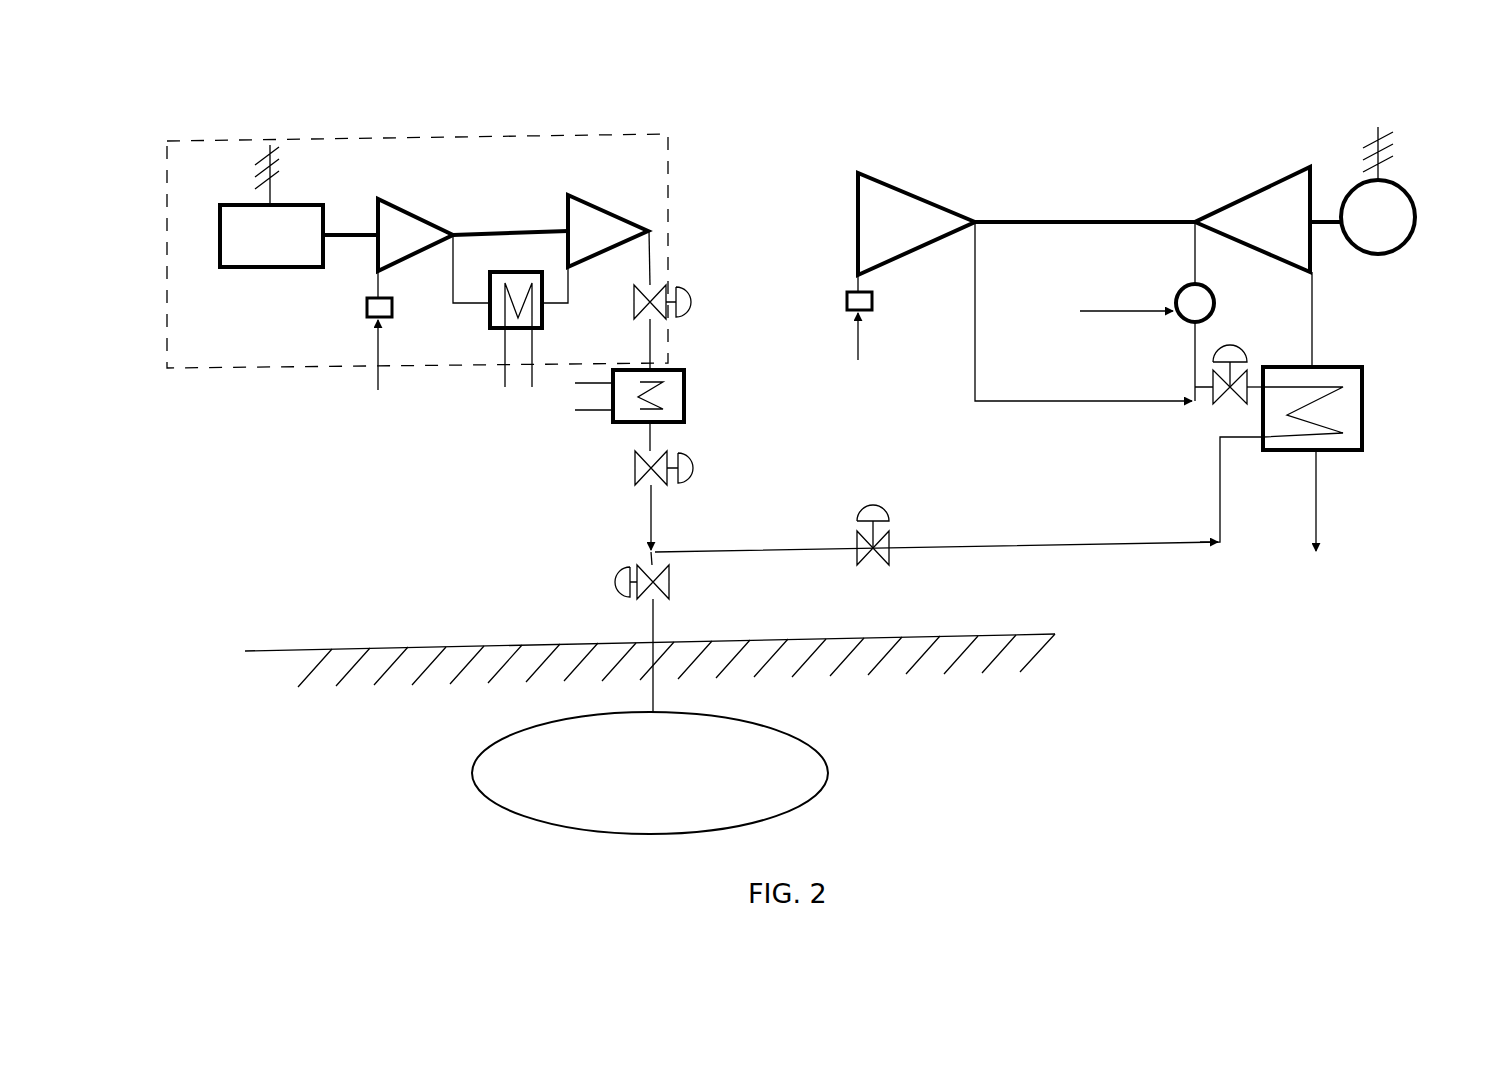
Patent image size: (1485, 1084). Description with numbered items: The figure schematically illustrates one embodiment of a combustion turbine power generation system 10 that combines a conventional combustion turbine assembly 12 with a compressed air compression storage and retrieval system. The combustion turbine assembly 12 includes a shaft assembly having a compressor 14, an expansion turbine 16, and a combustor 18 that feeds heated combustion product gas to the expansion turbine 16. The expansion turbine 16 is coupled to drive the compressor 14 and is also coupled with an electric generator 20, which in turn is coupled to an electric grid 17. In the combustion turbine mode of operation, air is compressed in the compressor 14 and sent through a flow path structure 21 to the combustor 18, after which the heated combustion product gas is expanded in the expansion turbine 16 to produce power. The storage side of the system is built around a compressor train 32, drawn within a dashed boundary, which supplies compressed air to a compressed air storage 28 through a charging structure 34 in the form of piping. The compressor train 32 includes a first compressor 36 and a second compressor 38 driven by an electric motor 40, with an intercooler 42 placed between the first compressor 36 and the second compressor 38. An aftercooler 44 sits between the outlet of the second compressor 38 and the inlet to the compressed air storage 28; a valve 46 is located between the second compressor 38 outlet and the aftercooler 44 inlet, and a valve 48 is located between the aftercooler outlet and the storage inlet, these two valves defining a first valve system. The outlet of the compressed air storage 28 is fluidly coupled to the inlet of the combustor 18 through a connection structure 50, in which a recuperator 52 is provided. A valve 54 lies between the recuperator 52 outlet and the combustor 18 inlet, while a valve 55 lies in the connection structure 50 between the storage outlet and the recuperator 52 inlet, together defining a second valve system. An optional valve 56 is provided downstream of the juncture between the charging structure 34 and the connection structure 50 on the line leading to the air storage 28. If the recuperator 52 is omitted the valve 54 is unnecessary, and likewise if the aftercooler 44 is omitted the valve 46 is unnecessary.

The combustion turbine power generation system 10 is at (784, 88).
The combustion turbine assembly 12 is at (1083, 200).
The compressor 14 is at (898, 210).
The expansion turbine 16 is at (1251, 220).
The electric grid 17 is at (250, 176).
The combustor 18 is at (1180, 323).
The electric generator 20 is at (1405, 218).
The flow path structure 21 is at (987, 362).
The compressed air storage 28 is at (802, 768).
The compressor train 32 is at (660, 168).
The charging structure 34 is at (665, 520).
The first compressor 36 is at (410, 225).
The second compressor 38 is at (582, 220).
The electric motor 40 is at (257, 273).
The intercooler 42 is at (487, 316).
The aftercooler 44 is at (676, 400).
The valve 46 is at (691, 302).
The valve 48 is at (693, 467).
The connection structure 50 is at (1050, 542).
The recuperator 52 is at (1355, 408).
The valve 54 is at (1236, 350).
The valve 55 is at (880, 507).
The valve 56 is at (618, 581).